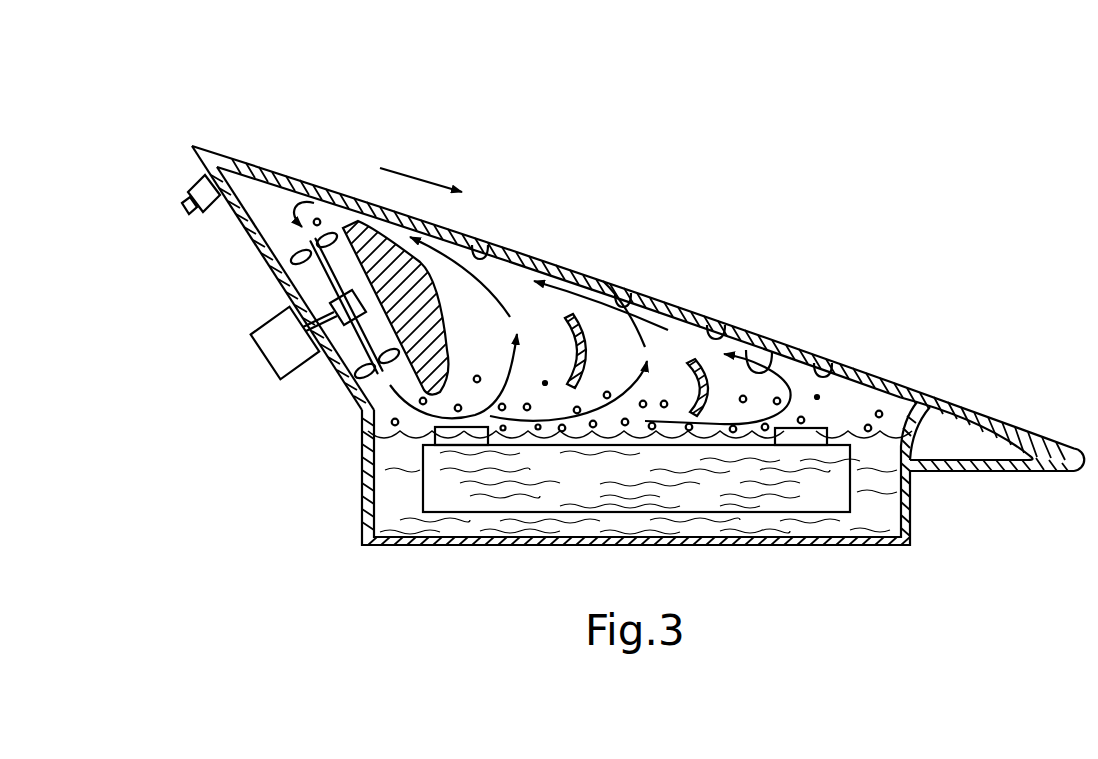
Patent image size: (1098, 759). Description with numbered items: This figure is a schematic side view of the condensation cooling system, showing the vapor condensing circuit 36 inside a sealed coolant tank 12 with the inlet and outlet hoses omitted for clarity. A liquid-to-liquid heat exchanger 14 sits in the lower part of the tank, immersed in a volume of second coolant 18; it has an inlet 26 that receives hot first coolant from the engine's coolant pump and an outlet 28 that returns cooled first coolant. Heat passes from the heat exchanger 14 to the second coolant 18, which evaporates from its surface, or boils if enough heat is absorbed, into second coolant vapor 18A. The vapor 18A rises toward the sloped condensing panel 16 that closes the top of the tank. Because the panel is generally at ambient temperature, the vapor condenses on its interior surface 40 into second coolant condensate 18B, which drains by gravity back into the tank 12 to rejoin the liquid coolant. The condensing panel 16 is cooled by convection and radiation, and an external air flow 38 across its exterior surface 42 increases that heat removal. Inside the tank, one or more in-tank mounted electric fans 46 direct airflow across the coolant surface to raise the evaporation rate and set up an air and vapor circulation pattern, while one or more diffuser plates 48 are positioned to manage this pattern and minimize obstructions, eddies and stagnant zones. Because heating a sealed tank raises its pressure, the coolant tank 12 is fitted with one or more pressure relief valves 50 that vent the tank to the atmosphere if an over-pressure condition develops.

The coolant tank 12 is at (915, 492).
The liquid-to-liquid heat exchanger 14 is at (793, 505).
The condensing panel 16 is at (639, 248).
The second coolant 18 is at (388, 485).
The second coolant vapor 18A is at (898, 415).
The second coolant condensate 18B is at (490, 248).
The inlet 26 is at (445, 420).
The outlet 28 is at (878, 411).
The vapor condensing circuit 36 is at (575, 211).
The external air flow 38 is at (450, 117).
The interior surface 40 is at (748, 355).
The exterior surface 42 is at (813, 428).
The fans 46 is at (358, 390).
The diffuser plates 48 is at (358, 228).
The pressure relief valves 50 is at (188, 190).